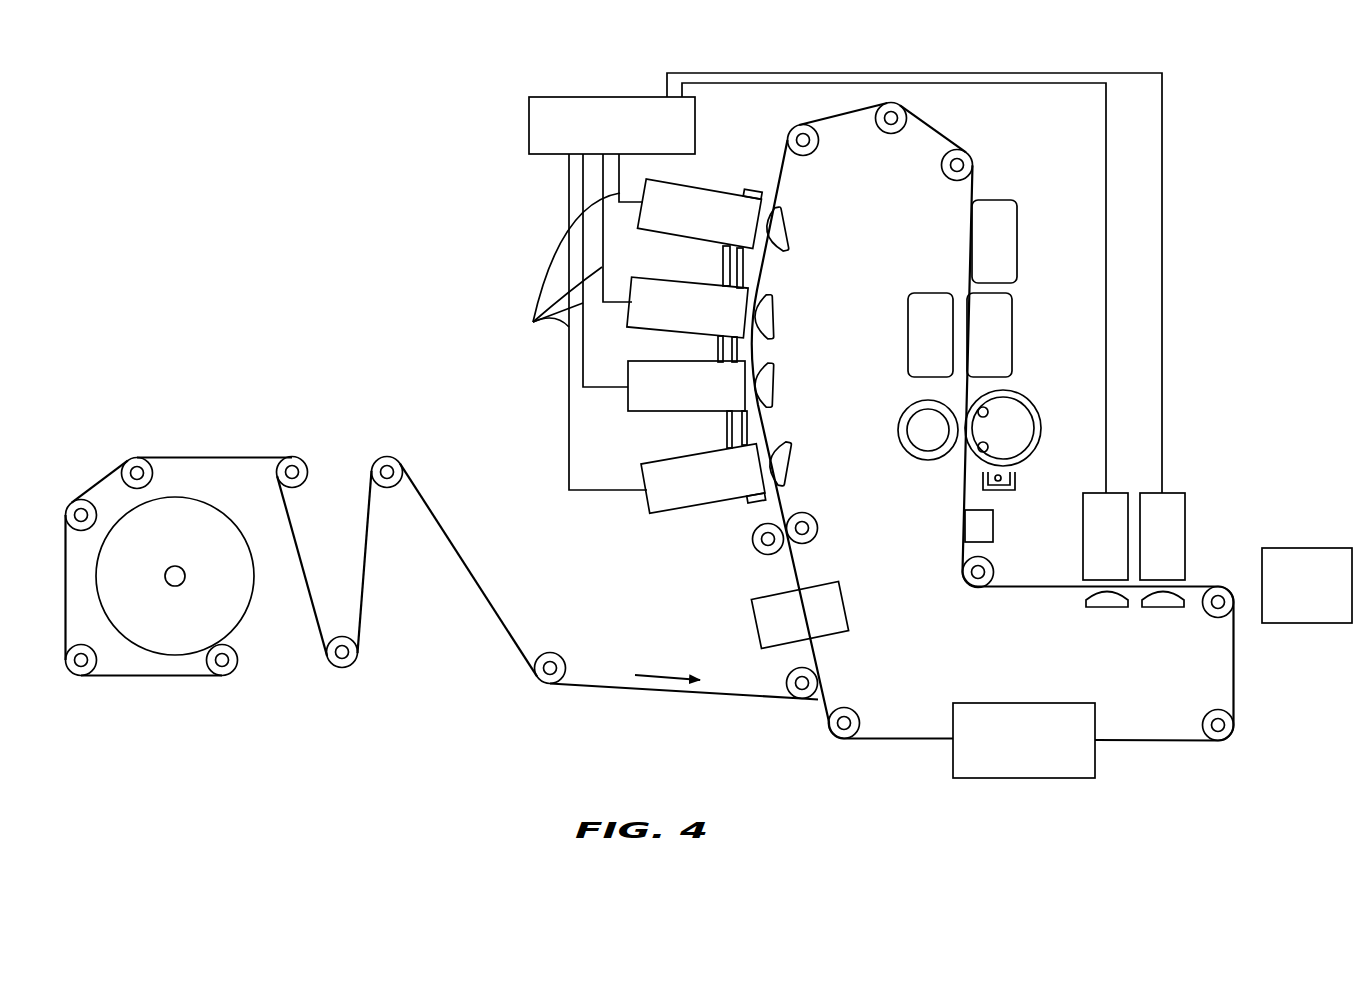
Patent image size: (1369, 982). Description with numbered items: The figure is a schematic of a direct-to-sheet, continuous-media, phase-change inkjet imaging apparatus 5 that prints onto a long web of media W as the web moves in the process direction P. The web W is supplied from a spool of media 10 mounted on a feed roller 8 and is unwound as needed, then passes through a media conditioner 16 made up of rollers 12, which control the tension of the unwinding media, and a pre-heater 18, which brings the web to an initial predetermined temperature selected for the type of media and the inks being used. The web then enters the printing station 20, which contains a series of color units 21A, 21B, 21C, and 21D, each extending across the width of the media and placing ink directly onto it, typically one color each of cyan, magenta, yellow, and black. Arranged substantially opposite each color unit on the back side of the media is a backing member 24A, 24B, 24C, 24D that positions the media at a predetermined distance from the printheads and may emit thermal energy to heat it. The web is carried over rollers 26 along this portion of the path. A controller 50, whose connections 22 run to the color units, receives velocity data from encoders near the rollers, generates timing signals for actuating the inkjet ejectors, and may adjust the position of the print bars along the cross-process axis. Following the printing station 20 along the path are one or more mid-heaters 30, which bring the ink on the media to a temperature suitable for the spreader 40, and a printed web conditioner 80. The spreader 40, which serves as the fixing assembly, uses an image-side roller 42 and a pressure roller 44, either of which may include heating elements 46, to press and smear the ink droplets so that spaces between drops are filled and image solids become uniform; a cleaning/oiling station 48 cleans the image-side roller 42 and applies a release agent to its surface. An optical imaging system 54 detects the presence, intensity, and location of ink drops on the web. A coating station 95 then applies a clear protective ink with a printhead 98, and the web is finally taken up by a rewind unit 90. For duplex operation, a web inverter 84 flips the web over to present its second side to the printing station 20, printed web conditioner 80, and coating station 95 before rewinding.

The imaging apparatus 5 is at (406, 171).
The web of media W is at (207, 456).
The process direction P is at (673, 673).
The feed roller 8 is at (175, 587).
The spool of media 10 is at (247, 541).
The rollers 12 is at (389, 487).
The media conditioner 16 is at (554, 606).
The pre-heater 18 is at (851, 605).
The printing station 20 is at (558, 412).
The color unit 21A is at (702, 510).
The color unit 21B is at (680, 413).
The color unit 21C is at (672, 333).
The color unit 21D is at (690, 237).
The controller connections 22 is at (579, 322).
The backing member 24A is at (790, 462).
The backing member 24B is at (774, 313).
The backing member 24C is at (774, 383).
The backing member 24D is at (786, 227).
The rollers 26 is at (818, 150).
The mid-heater 30 is at (1031, 237).
The spreader 40 is at (1033, 367).
The image-side roller 42 is at (1042, 445).
The pressure roller 44 is at (920, 440).
The heating elements 46 is at (987, 444).
The cleaning/oiling station 48 is at (997, 492).
The controller 50 is at (615, 96).
The optical imaging system 54 is at (978, 527).
The printed web conditioner 80 is at (941, 555).
The web inverter 84 is at (1023, 703).
The rewind unit 90 is at (1307, 547).
The coating station 95 is at (1176, 469).
The printhead 98 is at (1082, 537).